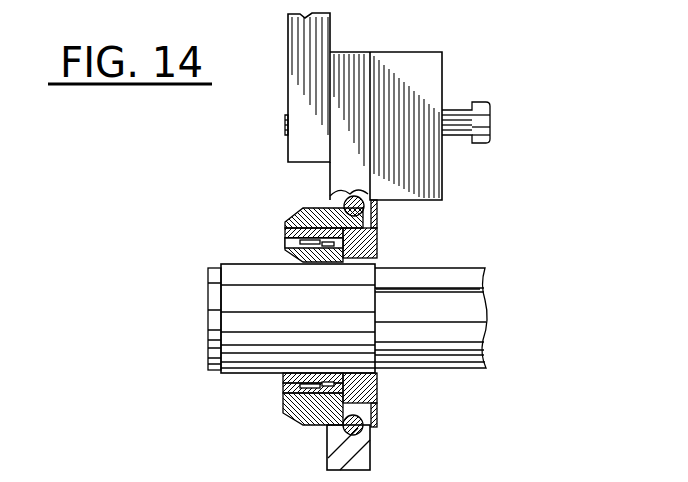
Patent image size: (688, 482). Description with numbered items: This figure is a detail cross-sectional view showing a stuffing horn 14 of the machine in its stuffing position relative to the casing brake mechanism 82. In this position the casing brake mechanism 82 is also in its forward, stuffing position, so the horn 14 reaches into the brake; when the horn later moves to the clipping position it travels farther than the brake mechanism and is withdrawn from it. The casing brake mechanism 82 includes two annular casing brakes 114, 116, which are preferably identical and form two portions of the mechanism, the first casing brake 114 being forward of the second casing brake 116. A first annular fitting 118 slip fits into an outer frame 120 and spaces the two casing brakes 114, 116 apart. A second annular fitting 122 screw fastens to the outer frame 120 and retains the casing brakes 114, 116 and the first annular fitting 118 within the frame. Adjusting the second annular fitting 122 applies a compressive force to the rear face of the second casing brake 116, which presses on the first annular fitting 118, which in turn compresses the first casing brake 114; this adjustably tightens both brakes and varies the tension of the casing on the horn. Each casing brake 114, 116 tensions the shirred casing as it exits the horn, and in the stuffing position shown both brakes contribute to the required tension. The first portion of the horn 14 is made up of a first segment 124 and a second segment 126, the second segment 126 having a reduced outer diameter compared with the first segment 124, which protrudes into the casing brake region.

The horn 14 is at (440, 332).
The casing brake mechanism 82 is at (292, 412).
The first casing brake 114 is at (300, 250).
The second casing brake 116 is at (377, 290).
The first annular fitting 118 is at (330, 210).
The outer frame 120 is at (303, 215).
The second annular fitting 122 is at (377, 245).
The first segment 124 is at (482, 292).
The second segment 126 is at (208, 270).